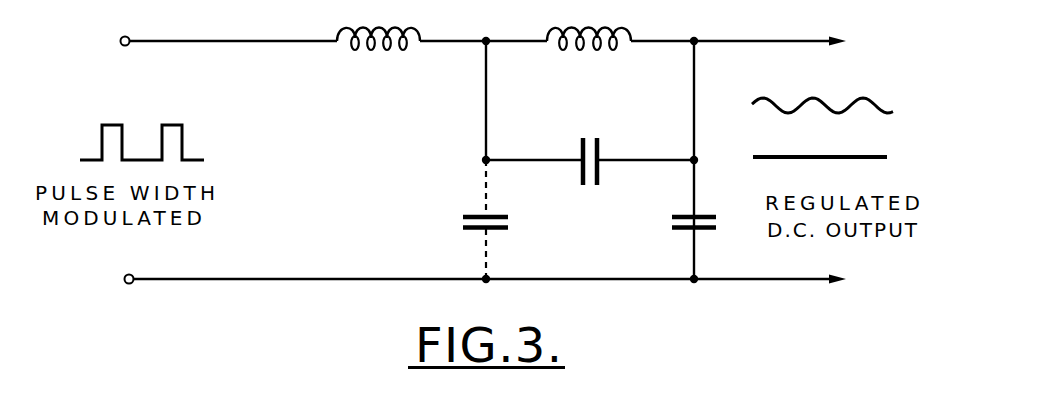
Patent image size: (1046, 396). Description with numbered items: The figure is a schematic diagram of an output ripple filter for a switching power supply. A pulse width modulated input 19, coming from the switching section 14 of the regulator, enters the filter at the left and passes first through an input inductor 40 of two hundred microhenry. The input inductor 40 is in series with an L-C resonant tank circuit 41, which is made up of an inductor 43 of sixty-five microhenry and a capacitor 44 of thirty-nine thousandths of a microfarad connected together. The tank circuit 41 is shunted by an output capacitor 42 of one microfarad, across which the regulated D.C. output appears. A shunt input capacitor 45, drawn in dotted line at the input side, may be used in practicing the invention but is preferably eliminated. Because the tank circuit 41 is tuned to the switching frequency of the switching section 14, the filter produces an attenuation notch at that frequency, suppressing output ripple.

The switching section 14 is at (238, 252).
The pulse width modulated input signal 19 is at (87, 136).
The input inductor 40 is at (385, 51).
The L-C resonant tank circuit 41 is at (607, 106).
The output capacitor 42 is at (672, 218).
The inductor 43 is at (633, 31).
The capacitor 44 is at (598, 153).
The shunt input capacitor 45 is at (463, 219).